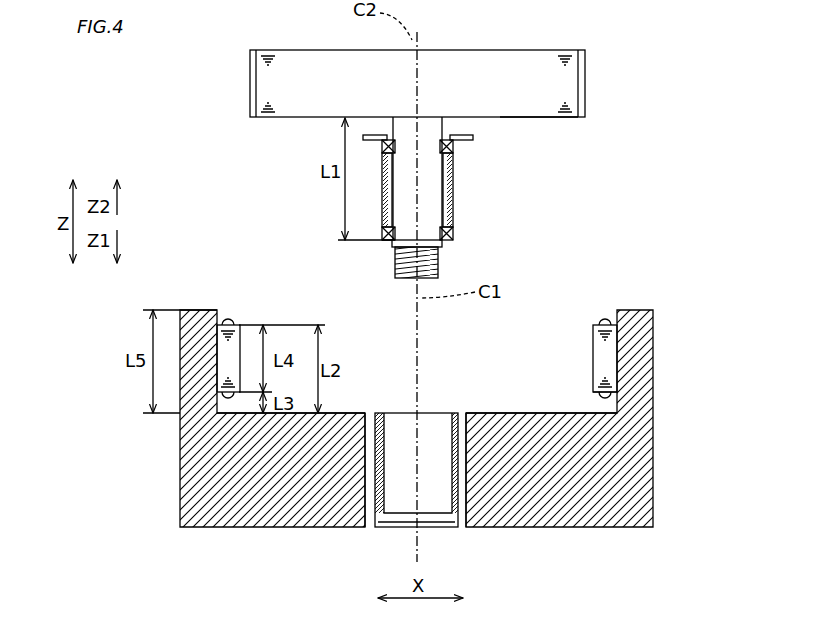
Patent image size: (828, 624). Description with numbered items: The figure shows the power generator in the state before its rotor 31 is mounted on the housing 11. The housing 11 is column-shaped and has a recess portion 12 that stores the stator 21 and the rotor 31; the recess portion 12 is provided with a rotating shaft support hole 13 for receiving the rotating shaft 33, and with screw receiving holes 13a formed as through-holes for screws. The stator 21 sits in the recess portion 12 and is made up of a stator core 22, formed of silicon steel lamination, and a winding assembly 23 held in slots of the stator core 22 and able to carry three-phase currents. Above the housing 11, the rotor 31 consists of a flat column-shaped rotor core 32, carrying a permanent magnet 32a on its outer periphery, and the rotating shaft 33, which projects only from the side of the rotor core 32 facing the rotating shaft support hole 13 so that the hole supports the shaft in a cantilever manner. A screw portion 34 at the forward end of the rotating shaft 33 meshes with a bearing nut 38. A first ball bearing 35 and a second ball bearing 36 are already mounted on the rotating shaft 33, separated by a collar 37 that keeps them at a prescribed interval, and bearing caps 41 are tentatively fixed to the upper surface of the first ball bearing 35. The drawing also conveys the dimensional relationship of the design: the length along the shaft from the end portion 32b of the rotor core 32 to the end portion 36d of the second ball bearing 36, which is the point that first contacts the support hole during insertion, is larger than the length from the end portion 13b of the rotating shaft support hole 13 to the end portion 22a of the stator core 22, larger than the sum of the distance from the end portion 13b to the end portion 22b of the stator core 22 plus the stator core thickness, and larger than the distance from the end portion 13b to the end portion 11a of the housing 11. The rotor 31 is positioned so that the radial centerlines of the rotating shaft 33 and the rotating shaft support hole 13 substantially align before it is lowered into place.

The housing 11 is at (640, 476).
The end portion of the housing 11a is at (200, 310).
The recess portion 12 is at (533, 413).
The rotating shaft support hole 13 is at (446, 450).
The screw receiving holes 13a is at (462, 425).
The end portion of the rotating shaft support hole 13b is at (378, 415).
The stator 21 is at (600, 345).
The stator core 22 is at (610, 365).
The end portion of the stator core 22a is at (236, 325).
The end portion of the stator core 22b is at (228, 400).
The winding assembly 23 is at (618, 395).
The rotor 31 is at (487, 75).
The rotor core 32 is at (537, 72).
The permanent magnet 32a is at (582, 50).
The end portion of the rotor core 32b is at (540, 117).
The rotating shaft 33 is at (407, 130).
The screw portion 34 is at (440, 270).
The first ball bearing 35 is at (456, 147).
The second ball bearing 36 is at (453, 230).
The end portion of the second ball bearing 36d is at (380, 245).
The collar 37 is at (455, 205).
The bearing nut 38 is at (445, 245).
The bearing caps 41 is at (462, 134).